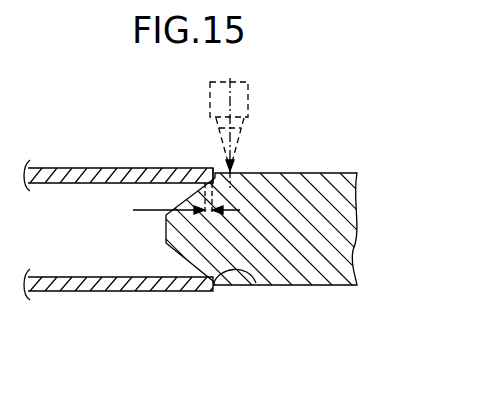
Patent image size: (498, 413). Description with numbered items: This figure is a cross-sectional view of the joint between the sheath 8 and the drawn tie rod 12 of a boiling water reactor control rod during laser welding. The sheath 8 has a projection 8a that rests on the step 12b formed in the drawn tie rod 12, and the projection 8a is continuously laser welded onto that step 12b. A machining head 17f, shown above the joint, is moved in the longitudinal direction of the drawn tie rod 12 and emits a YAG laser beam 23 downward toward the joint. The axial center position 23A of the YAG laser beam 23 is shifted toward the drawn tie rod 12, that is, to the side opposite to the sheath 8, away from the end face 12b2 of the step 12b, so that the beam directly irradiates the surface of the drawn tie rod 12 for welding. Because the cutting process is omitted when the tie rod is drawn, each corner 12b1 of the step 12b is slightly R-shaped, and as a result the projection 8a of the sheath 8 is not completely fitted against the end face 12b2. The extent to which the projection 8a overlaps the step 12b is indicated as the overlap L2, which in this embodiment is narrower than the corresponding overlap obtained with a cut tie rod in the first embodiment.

The sheath 8 is at (75, 168).
The projection 8a is at (207, 168).
The drawn tie rod 12 is at (323, 286).
The step 12b is at (210, 284).
The corner 12b1 is at (243, 285).
The end face 12b2 is at (217, 289).
The machining head 17f is at (248, 94).
The YAG laser beam 23 is at (237, 141).
The axial center position 23A is at (236, 152).
The overlap L2 is at (186, 198).